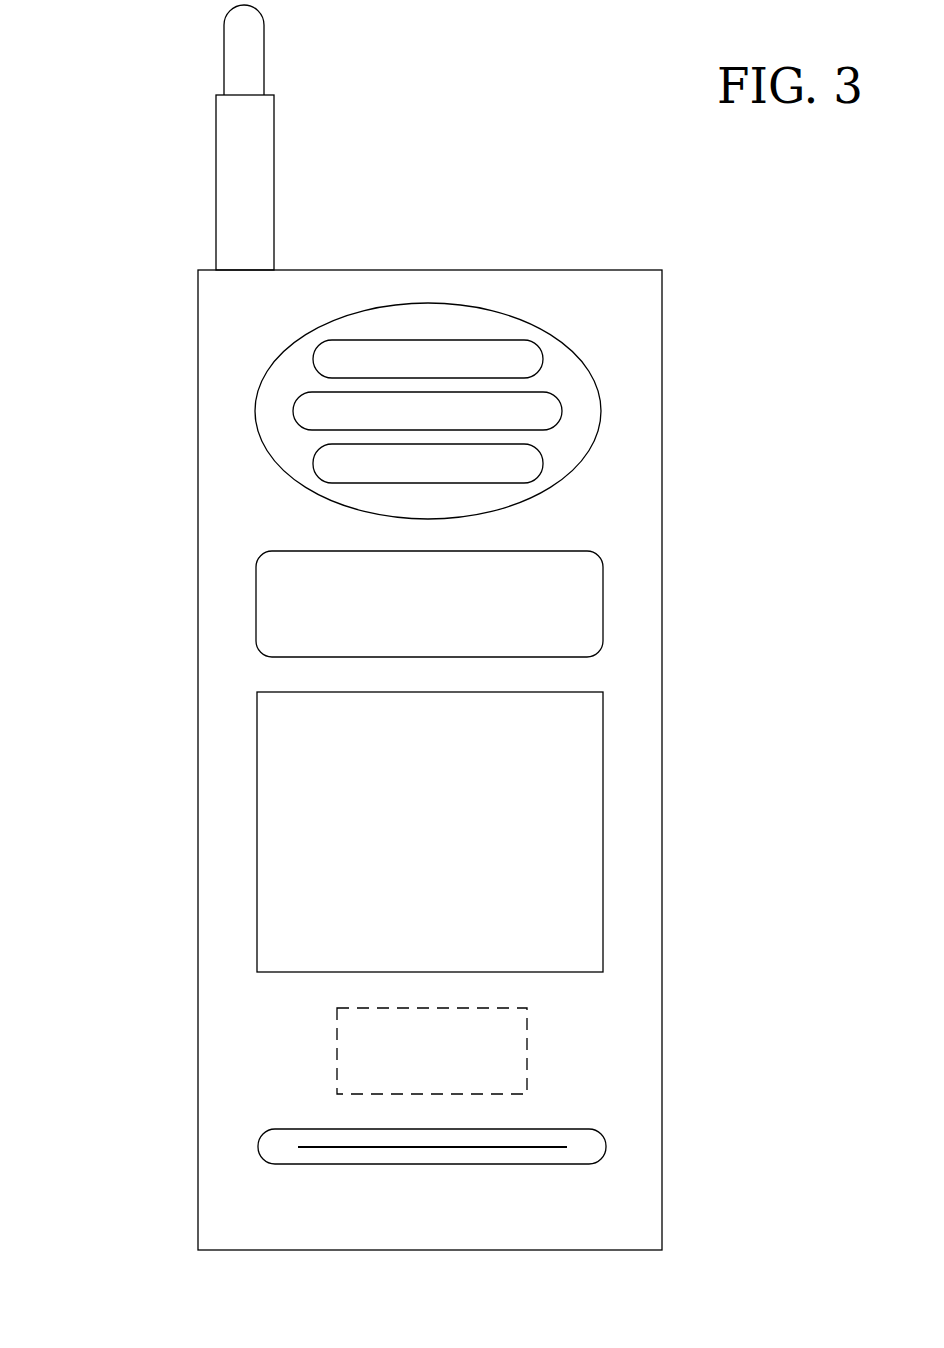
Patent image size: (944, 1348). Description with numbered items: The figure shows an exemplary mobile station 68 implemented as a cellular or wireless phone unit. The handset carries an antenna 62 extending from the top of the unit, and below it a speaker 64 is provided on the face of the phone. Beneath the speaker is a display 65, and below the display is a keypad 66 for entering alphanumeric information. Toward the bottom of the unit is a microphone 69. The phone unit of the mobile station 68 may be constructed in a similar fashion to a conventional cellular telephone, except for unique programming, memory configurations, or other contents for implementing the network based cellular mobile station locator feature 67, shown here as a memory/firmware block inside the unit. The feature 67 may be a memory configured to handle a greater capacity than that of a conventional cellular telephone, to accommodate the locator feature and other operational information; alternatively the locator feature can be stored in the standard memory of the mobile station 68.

The antenna 62 is at (240, 173).
The speaker 64 is at (305, 392).
The display 65 is at (572, 632).
The keypad 66 is at (597, 900).
The network based cellular mobile station locator feature 67 is at (532, 1060).
The mobile station 68 is at (153, 693).
The microphone 69 is at (300, 1155).